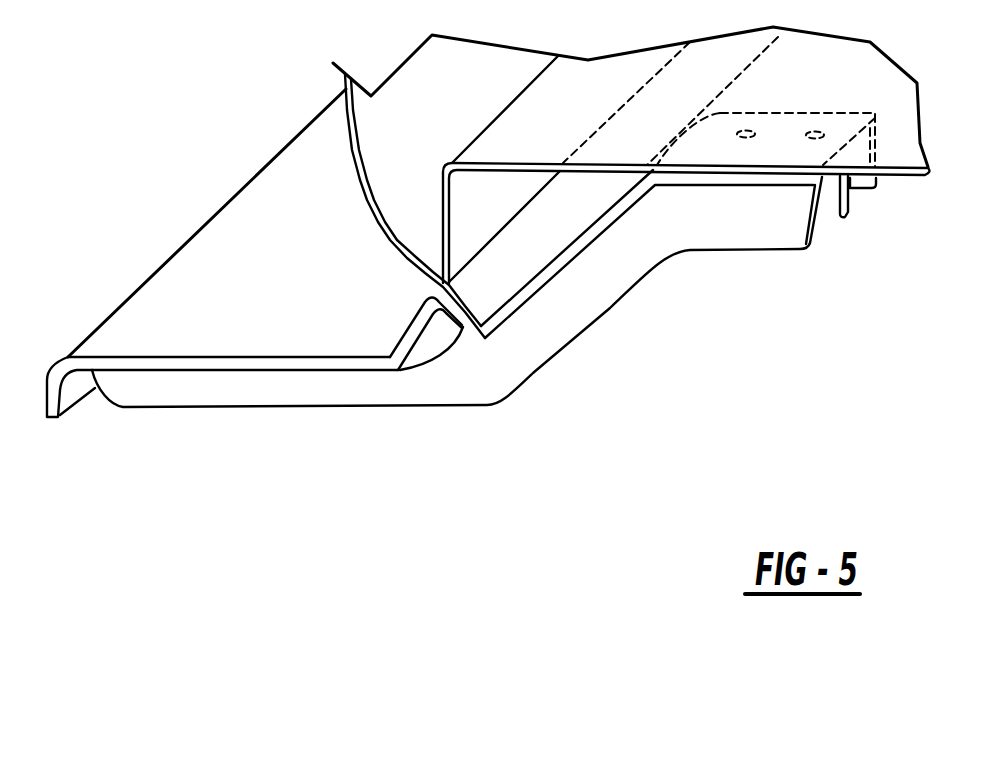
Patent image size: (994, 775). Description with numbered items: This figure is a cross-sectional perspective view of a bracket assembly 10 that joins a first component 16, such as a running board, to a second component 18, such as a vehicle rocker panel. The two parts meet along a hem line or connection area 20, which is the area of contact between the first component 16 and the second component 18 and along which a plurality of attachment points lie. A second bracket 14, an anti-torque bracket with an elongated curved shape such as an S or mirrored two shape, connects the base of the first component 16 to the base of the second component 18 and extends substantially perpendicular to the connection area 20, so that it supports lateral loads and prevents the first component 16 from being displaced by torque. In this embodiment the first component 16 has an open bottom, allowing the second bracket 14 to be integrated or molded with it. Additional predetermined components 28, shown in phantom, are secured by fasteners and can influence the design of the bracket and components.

The bracket assembly 10 is at (173, 173).
The second bracket 14 is at (748, 250).
The first component 16 is at (125, 297).
The second component 18 is at (897, 177).
The connection area 20 is at (462, 322).
The additional predetermined components 28 is at (350, 143).